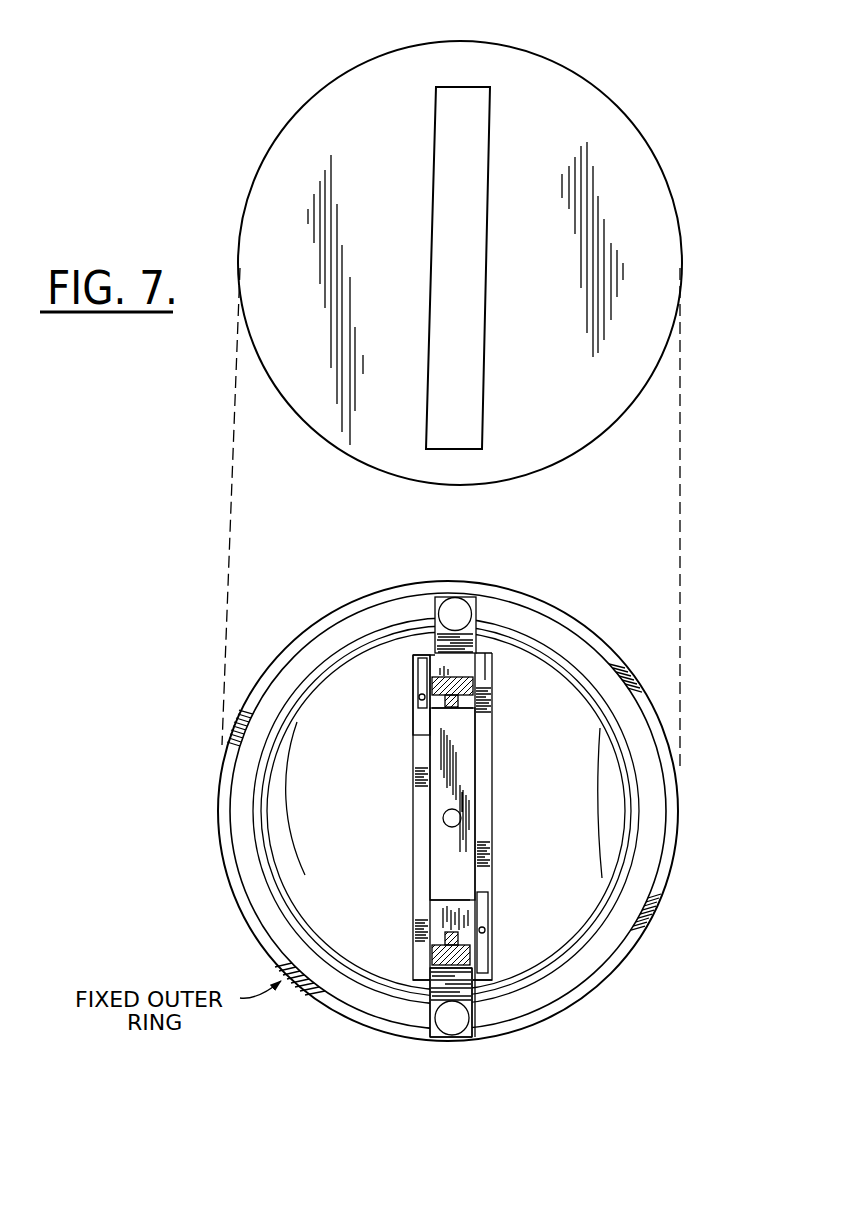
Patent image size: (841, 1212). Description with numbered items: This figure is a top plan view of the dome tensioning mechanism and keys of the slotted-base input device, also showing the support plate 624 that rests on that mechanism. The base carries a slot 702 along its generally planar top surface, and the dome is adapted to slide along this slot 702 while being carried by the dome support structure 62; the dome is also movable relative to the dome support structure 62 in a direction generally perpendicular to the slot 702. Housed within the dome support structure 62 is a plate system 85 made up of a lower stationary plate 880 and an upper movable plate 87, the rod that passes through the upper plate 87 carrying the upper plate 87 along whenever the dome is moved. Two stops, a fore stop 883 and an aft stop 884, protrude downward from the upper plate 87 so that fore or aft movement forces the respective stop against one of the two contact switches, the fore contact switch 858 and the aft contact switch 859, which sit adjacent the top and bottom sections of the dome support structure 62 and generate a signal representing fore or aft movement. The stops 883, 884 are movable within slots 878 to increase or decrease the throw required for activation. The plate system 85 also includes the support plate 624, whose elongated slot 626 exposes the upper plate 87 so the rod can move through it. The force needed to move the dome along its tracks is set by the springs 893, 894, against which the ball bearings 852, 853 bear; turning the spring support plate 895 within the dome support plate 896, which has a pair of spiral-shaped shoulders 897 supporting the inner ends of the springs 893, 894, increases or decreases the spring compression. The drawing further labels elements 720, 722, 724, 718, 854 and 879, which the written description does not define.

The dome support structure 62 is at (228, 525).
The support plate 624 is at (655, 215).
The elongated slot 626 is at (480, 127).
The ball bearing 852 is at (456, 600).
The ball bearing 853 is at (461, 1034).
The spring 893 is at (467, 639).
The spring 894 is at (432, 1003).
The fore contact switch 858 is at (470, 679).
The aft contact switch 859 is at (469, 964).
The fore stop 883 is at (431, 706).
The lower pin 879 is at (433, 954).
The upper bracket 720 is at (411, 666).
The carrier frame 722 is at (437, 661).
The lower carrier end 724 is at (435, 979).
The upper movable plate 87 is at (433, 756).
The plate system 85 is at (466, 780).
The slot 702 is at (463, 760).
The lower stationary plate 880 is at (433, 796).
The aft stop 884 is at (421, 900).
The slots 878 is at (494, 848).
The carrier body 718 is at (454, 862).
The lower bracket 854 is at (490, 924).
The spring support plate 895 is at (674, 821).
The dome support plate 896 is at (670, 877).
The spiral-shaped shoulders 897 is at (244, 805).